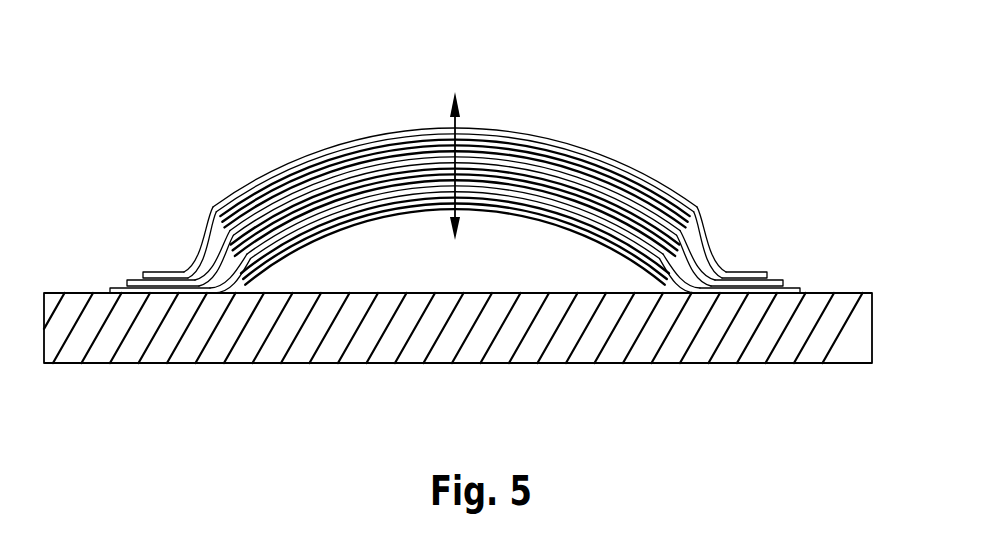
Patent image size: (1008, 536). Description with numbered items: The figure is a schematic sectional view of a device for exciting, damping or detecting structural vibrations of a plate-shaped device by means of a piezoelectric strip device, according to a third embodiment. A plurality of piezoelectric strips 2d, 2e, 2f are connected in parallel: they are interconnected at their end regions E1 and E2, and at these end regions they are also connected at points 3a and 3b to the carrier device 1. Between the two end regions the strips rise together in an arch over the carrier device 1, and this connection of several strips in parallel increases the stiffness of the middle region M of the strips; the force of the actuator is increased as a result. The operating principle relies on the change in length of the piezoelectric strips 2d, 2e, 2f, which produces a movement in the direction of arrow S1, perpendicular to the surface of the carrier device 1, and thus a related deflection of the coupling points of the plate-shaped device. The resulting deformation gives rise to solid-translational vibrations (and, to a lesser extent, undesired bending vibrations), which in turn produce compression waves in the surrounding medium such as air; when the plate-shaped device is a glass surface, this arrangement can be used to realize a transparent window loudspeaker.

The carrier device 1 is at (862, 333).
The piezoelectric strip 2d is at (680, 268).
The piezoelectric strip 2e is at (692, 240).
The piezoelectric strip 2f is at (660, 202).
The connection point 3a is at (158, 294).
The connection point 3b is at (752, 294).
The end region E1 is at (148, 258).
The end region E2 is at (783, 265).
The middle region M is at (478, 112).
The arrow indicating direction of movement S1 is at (453, 120).